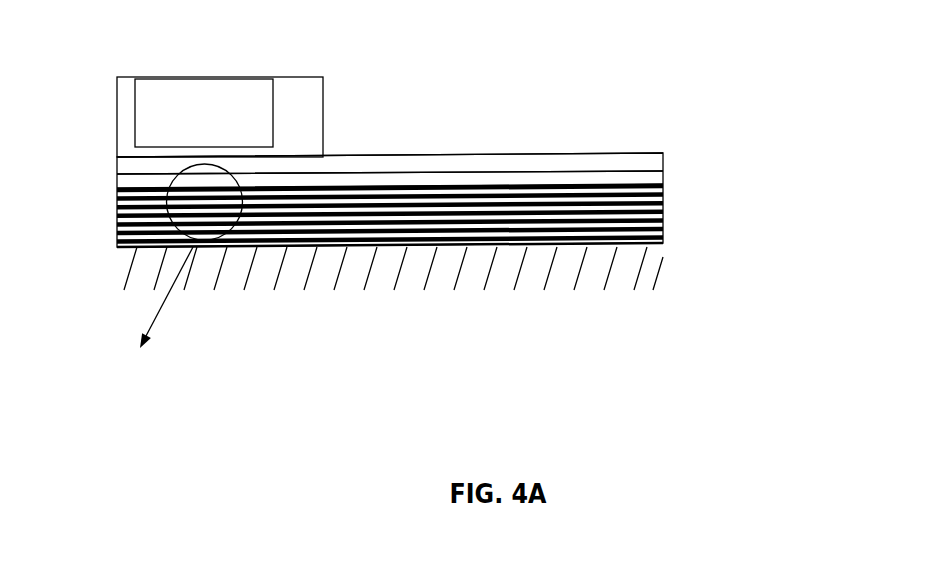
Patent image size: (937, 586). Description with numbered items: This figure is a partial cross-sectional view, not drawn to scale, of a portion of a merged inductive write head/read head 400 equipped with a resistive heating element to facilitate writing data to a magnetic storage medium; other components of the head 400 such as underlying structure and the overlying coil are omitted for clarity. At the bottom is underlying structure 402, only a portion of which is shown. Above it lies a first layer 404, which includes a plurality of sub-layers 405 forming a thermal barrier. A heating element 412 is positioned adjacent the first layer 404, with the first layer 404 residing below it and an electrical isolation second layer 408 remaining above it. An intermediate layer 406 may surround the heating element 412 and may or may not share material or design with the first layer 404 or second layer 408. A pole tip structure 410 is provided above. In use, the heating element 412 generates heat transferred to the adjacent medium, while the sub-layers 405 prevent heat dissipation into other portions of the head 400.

The merged inductive write head/read head 400 is at (428, 255).
The underlying structure 402 is at (128, 248).
The first layer 404 is at (117, 237).
The sub-layers 405 is at (428, 166).
The intermediate layer 406 is at (152, 182).
The electrical isolation second layer 408 is at (137, 166).
The pole tip structure 410 is at (133, 97).
The heating element 412 is at (245, 182).